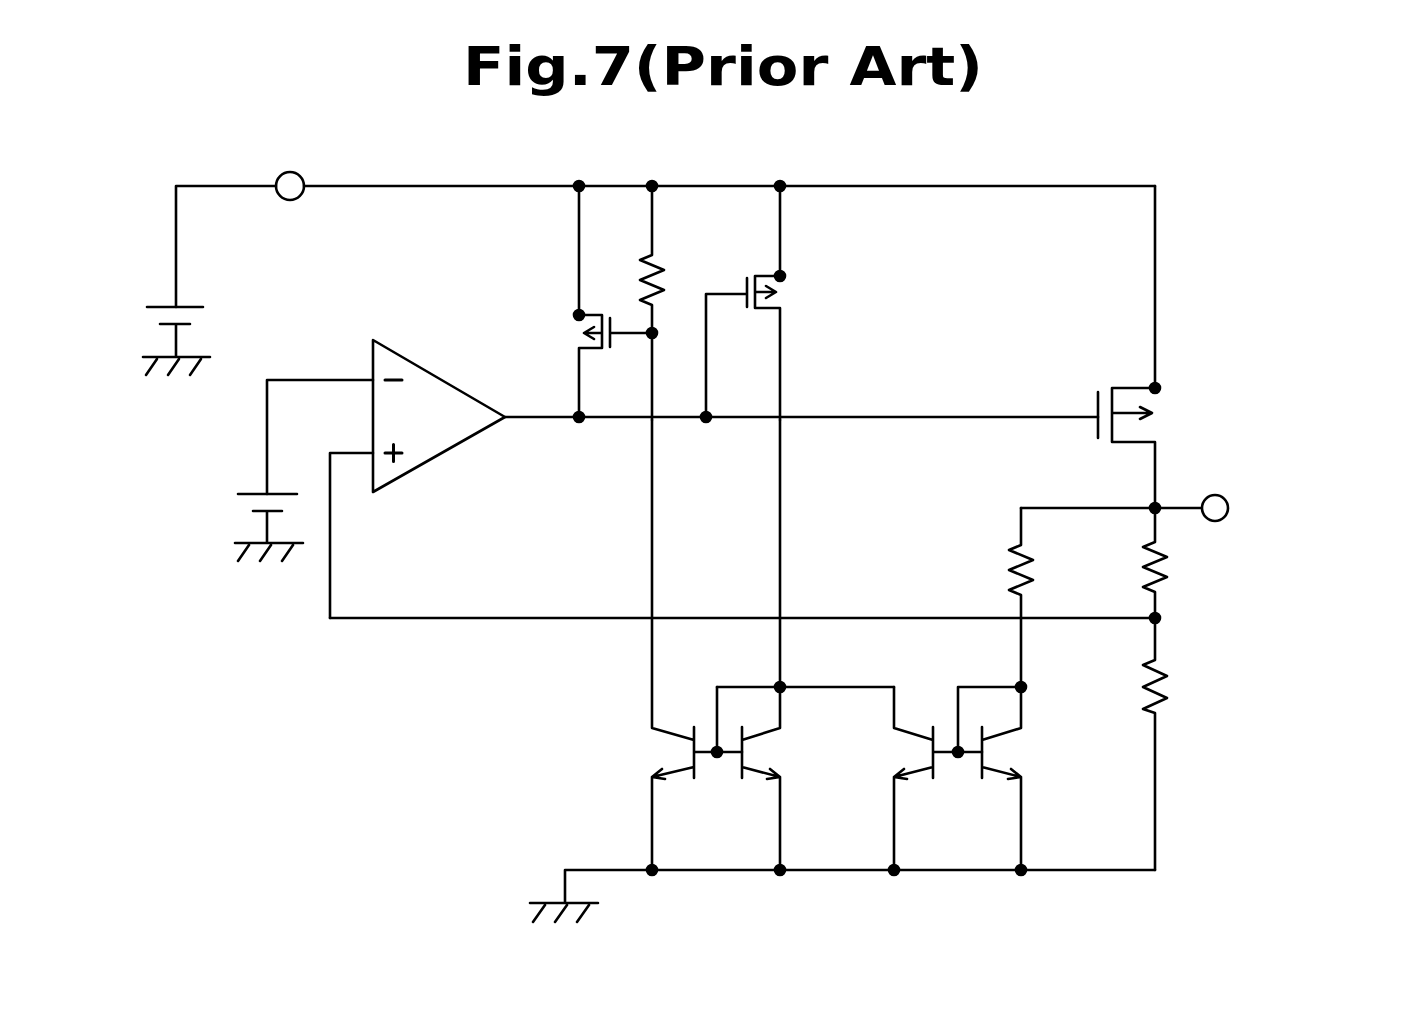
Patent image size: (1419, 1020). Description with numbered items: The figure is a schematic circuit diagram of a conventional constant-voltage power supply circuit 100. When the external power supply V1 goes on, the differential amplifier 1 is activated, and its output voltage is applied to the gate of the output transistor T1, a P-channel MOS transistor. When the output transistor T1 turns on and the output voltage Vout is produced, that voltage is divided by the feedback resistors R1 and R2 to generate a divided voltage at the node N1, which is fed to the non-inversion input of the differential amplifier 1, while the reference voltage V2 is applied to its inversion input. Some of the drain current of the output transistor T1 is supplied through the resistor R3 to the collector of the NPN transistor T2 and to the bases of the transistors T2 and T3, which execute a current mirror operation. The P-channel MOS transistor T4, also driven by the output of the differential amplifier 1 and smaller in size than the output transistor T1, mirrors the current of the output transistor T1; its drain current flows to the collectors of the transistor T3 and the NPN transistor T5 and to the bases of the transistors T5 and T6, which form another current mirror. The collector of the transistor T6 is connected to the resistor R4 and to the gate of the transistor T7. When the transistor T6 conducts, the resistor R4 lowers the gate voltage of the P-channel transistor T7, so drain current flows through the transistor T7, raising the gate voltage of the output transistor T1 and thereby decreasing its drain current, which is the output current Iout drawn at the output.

The constant-voltage power supply circuit 100 is at (1287, 121).
The differential amplifier 1 is at (426, 366).
The external power supply V1 is at (190, 306).
The reference voltage V2 is at (258, 493).
The output transistor T1 is at (1142, 440).
The NPN transistor T2 is at (1008, 742).
The transistor T3 is at (905, 735).
The P-channel MOS transistor T4 is at (773, 303).
The NPN transistor T5 is at (770, 742).
The NPN transistor T6 is at (664, 738).
The P-channel MOS transistor T7 is at (579, 318).
The feedback resistor R1 is at (1162, 560).
The feedback resistor R2 is at (1162, 672).
The resistor R3 is at (1028, 553).
The resistor R4 is at (656, 258).
The node N1 is at (770, 618).
The output current Iout is at (1166, 450).
The output voltage Vout is at (1167, 508).